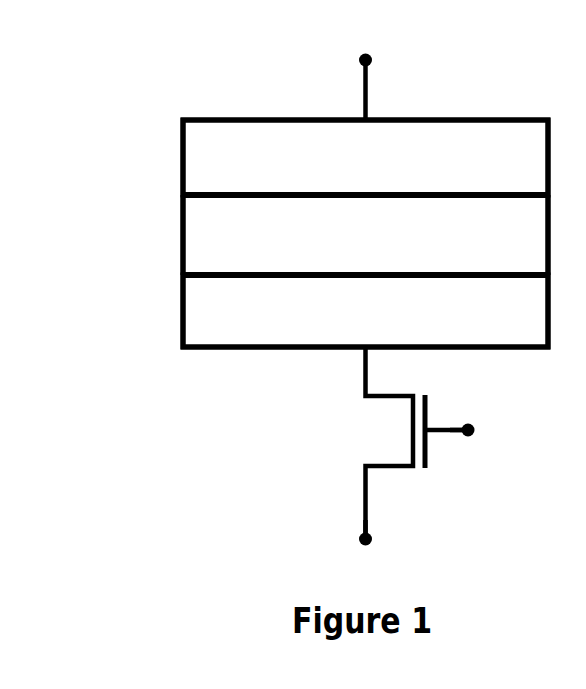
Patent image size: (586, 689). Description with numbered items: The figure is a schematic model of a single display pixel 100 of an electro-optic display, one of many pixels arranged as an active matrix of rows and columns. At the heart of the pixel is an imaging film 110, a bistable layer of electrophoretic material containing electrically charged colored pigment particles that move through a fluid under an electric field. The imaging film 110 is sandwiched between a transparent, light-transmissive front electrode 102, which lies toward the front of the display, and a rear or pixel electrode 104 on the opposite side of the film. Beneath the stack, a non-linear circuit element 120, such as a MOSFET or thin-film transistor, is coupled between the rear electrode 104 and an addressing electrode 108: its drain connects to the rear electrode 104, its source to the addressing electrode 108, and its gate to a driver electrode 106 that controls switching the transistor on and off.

The display pixel 100 is at (70, 33).
The front electrode 102 is at (206, 116).
The imaging film 110 is at (180, 210).
The rear electrode 104 is at (180, 310).
The non-linear circuit element 120 is at (428, 480).
The driver electrode 106 is at (463, 420).
The addressing electrode 108 is at (352, 524).